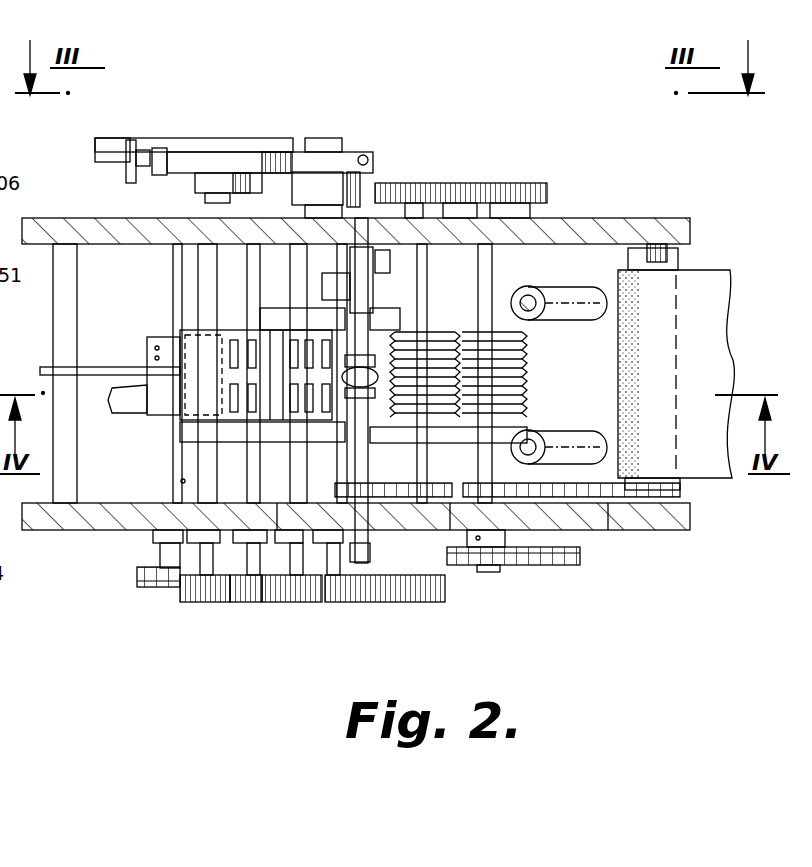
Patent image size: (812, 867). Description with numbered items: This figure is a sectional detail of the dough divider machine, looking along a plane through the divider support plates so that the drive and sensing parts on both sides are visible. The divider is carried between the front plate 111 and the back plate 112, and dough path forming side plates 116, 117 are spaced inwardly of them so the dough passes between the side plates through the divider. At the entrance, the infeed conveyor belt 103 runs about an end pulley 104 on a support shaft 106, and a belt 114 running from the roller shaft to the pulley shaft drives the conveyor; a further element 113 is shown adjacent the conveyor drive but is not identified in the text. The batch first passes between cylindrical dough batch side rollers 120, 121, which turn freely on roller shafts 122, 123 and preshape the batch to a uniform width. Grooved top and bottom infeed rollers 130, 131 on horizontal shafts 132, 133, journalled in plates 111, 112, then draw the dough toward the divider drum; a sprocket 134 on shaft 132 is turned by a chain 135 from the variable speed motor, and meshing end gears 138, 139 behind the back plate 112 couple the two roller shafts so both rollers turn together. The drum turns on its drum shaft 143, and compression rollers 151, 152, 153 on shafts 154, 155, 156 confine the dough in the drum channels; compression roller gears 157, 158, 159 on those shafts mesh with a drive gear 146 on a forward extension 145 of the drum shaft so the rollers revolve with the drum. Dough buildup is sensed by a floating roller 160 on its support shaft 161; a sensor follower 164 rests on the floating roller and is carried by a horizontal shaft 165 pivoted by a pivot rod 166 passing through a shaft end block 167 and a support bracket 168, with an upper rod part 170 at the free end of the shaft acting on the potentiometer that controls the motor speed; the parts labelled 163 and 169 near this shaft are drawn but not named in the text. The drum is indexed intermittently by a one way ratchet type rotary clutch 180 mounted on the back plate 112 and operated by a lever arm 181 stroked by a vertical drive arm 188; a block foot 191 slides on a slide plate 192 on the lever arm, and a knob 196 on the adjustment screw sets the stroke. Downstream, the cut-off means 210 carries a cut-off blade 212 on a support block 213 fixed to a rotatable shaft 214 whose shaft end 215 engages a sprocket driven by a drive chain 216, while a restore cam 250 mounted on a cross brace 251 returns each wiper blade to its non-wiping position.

The conveyor belt 103 is at (706, 348).
The end pulley 104 is at (690, 250).
The support shaft 106 is at (649, 254).
The front plate 111 is at (682, 516).
The back plate 112 is at (610, 226).
The rack bar 113 is at (682, 488).
The belt 114 is at (615, 530).
The dough path forming side plate 116 is at (540, 316).
The dough path forming side plate 117 is at (545, 428).
The dough batch side roller 120 is at (630, 433).
The dough batch side roller 121 is at (592, 303).
The roller shaft 122 is at (530, 428).
The roller shaft 123 is at (525, 296).
The top infeed roller 130 is at (524, 353).
The bottom infeed roller 131 is at (436, 352).
The shaft 132 is at (491, 262).
The shaft 133 is at (432, 290).
The sprocket 134 is at (512, 563).
The chain 135 is at (579, 570).
The end gear 138 is at (520, 183).
The end gear 139 is at (465, 190).
The drum shaft 143 is at (307, 266).
The forward extension 145 is at (330, 586).
The drive gear 146 is at (446, 602).
The compression roller 151 is at (243, 262).
The compression roller 152 is at (233, 337).
The compression roller 153 is at (170, 337).
The shaft 154 is at (266, 588).
The shaft 155 is at (222, 599).
The shaft 156 is at (180, 571).
The compression roller gear 157 is at (303, 586).
The compression roller gear 158 is at (246, 584).
The compression roller gear 159 is at (207, 591).
The floating roller 160 is at (390, 400).
The support shaft 161 is at (395, 478).
The shaft end 163 is at (400, 506).
The sensor follower 164 is at (342, 388).
The horizontal shaft 165 is at (394, 600).
The pivot rod 166 is at (393, 296).
The shaft end block 167 is at (371, 272).
The support bracket 168 is at (344, 255).
The bearing 169 is at (396, 268).
The upper rod part 170 is at (370, 566).
The one way ratchet type rotary clutch 180 is at (310, 184).
The lever arm 181 is at (266, 150).
The drive arm 188 is at (246, 180).
The block foot 191 is at (118, 138).
The slide plate 192 is at (96, 143).
The knob 196 is at (133, 150).
The cut-off means 210 is at (135, 340).
The cut-off blade 212 is at (116, 390).
The support block 213 is at (163, 404).
The rotatable shaft 214 is at (160, 481).
The shaft end 215 is at (140, 570).
The drive chain 216 is at (143, 588).
The restore cam 250 is at (90, 372).
The cross brace 251 is at (66, 250).